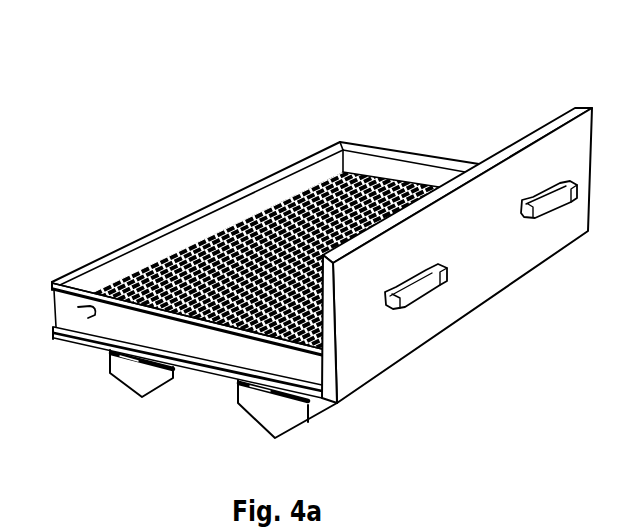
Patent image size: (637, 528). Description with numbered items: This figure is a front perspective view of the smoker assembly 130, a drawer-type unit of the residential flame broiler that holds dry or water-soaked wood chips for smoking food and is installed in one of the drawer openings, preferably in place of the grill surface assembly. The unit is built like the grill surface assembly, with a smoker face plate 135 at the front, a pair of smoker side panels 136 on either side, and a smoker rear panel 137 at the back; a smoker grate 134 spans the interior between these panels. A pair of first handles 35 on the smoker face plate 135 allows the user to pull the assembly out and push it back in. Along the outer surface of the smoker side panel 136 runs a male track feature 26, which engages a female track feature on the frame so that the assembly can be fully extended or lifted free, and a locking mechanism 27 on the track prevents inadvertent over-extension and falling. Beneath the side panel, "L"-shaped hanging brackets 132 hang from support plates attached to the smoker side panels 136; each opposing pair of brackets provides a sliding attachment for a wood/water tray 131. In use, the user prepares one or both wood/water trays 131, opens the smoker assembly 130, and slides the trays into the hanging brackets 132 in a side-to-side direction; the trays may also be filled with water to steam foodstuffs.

The smoker assembly 130 is at (498, 77).
The wood/water tray 131 is at (268, 415).
The hanging bracket 132 is at (110, 352).
The smoker grate 134 is at (312, 220).
The smoker face plate 135 is at (487, 193).
The smoker side panel 136 is at (93, 290).
The smoker rear panel 137 is at (222, 197).
The male track feature 26 is at (52, 281).
The locking mechanism 27 is at (80, 316).
The first handle 35 is at (535, 213).